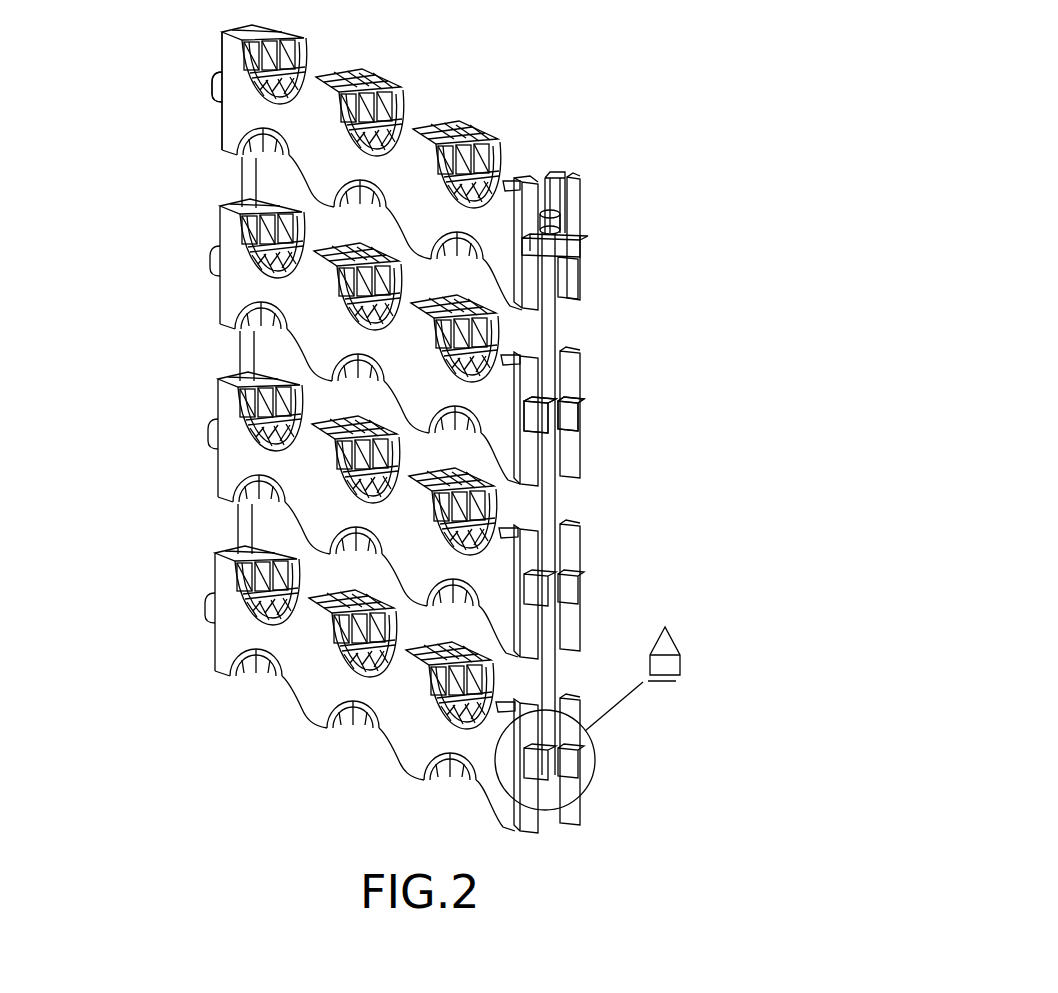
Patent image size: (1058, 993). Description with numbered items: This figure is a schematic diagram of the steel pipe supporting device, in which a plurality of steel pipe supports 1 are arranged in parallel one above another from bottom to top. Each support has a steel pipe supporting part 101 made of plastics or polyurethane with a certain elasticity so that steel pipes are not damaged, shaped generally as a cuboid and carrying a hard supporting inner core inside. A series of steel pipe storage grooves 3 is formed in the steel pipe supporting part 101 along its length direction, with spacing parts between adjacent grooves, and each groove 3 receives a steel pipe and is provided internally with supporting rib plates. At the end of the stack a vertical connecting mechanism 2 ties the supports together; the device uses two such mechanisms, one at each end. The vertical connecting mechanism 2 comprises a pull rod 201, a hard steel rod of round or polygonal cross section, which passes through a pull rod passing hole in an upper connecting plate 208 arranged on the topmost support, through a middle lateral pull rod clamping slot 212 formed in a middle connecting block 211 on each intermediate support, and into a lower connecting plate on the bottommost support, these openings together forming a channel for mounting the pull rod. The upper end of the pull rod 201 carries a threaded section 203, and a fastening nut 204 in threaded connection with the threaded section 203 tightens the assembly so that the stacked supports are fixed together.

The bottle support tray 1 is at (405, 93).
The steel pipe supporting part 101 is at (252, 108).
The steel pipe storage groove 3 is at (495, 158).
The vertical connecting mechanism 2 is at (604, 475).
The pull rod 201 is at (550, 313).
The threaded section 203 is at (553, 215).
The fastening nut 204 is at (560, 220).
The upper connecting plate 208 is at (572, 245).
The middle connecting block 211 is at (578, 420).
The middle lateral pull rod clamping slot 212 is at (570, 405).